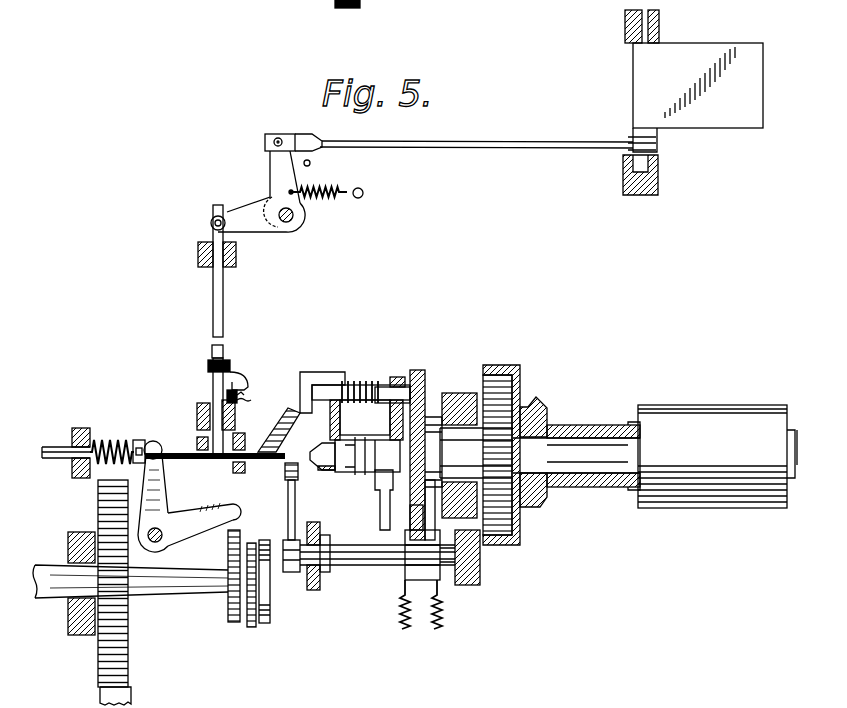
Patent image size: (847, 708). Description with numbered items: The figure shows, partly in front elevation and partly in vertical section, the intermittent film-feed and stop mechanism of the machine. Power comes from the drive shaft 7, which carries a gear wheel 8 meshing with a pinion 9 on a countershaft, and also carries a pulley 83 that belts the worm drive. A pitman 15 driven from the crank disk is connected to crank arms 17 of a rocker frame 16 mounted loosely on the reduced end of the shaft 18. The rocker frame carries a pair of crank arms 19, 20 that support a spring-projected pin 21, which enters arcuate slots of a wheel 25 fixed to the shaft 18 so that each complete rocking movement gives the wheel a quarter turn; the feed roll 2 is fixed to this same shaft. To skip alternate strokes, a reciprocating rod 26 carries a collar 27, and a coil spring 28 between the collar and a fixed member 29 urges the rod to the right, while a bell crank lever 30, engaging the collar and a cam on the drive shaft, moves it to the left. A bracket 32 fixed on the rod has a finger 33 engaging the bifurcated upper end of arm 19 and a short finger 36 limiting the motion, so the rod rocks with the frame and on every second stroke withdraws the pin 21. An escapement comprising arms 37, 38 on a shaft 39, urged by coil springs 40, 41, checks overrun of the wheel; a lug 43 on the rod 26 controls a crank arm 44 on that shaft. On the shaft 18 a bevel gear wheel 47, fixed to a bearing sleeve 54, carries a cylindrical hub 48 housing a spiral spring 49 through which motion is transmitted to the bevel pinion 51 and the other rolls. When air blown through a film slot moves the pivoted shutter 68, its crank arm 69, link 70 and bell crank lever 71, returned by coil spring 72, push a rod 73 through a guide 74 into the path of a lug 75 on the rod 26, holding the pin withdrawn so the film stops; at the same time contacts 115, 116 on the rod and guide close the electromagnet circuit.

The feed roll 2 is at (677, 406).
The drive shaft 7 is at (156, 595).
The gear wheel 8 is at (128, 666).
The pinion 9 is at (132, 700).
The pitman 15 is at (380, 517).
The rocker frame 16 is at (342, 472).
The crank arms 17 is at (392, 470).
The shaft 18 is at (540, 453).
The crank arm 19 is at (366, 420).
The crank arm 20 is at (398, 377).
The pin 21 is at (384, 386).
The wheel 25 is at (426, 382).
The rod 26 is at (182, 453).
The collar 27 is at (139, 440).
The coil spring 28 is at (109, 440).
The fixed member 29 is at (72, 462).
The bell crank lever 30 is at (165, 505).
The bracket 32 is at (305, 372).
The finger 33 is at (348, 383).
The short finger 36 is at (292, 445).
The escapement arm 37 is at (427, 516).
The escapement arm 38 is at (400, 567).
The shaft 39 is at (350, 567).
The coil spring 40 is at (445, 612).
The coil spring 41 is at (398, 622).
The lug 43 is at (276, 477).
The crank arm 44 is at (288, 498).
The bevel gear wheel 47 is at (546, 412).
The cylindrical hub 48 is at (521, 383).
The spiral spring 49 is at (483, 384).
The bevel pinion 51 is at (228, 549).
The bearing sleeve 54 is at (605, 428).
The shutter 68 is at (731, 52).
The crank arm 69 is at (657, 146).
The link 70 is at (495, 137).
The bell crank lever 71 is at (278, 199).
The coil spring 72 is at (322, 200).
The rod 73 is at (213, 289).
The guide 74 is at (205, 405).
The lug 75 is at (199, 437).
The pulley 83 is at (268, 588).
The contact 115 is at (228, 333).
The contact 116 is at (245, 397).